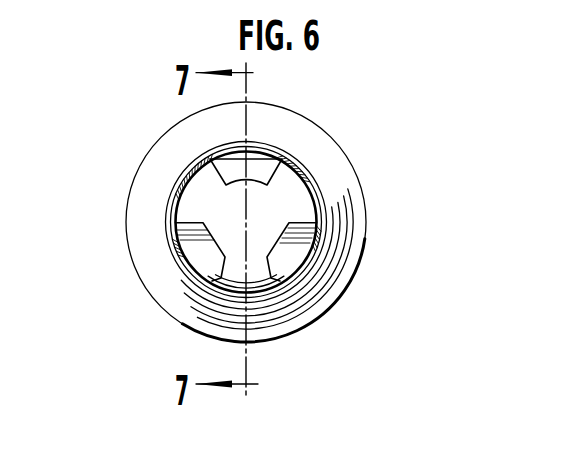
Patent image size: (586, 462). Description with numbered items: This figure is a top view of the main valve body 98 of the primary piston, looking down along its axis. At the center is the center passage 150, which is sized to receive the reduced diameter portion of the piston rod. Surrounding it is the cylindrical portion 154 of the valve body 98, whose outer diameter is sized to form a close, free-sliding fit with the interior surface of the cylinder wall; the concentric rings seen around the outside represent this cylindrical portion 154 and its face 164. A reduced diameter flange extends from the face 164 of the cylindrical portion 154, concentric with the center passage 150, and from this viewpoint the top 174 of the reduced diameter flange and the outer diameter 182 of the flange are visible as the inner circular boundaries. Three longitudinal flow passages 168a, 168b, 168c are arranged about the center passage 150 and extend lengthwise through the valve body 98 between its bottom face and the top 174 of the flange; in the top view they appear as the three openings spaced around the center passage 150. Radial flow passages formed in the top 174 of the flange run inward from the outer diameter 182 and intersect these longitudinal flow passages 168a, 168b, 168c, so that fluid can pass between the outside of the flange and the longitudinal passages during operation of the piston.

The valve body 98 is at (346, 120).
The face 164 is at (333, 157).
The flow passage 168a is at (300, 205).
The flow passage 168b is at (263, 280).
The flow passage 168c is at (180, 192).
The center passage 150 is at (272, 242).
The top of the reduced diameter flange 174 is at (190, 253).
The outer diameter of the flange 182 is at (211, 272).
The cylindrical portion 154 is at (312, 307).